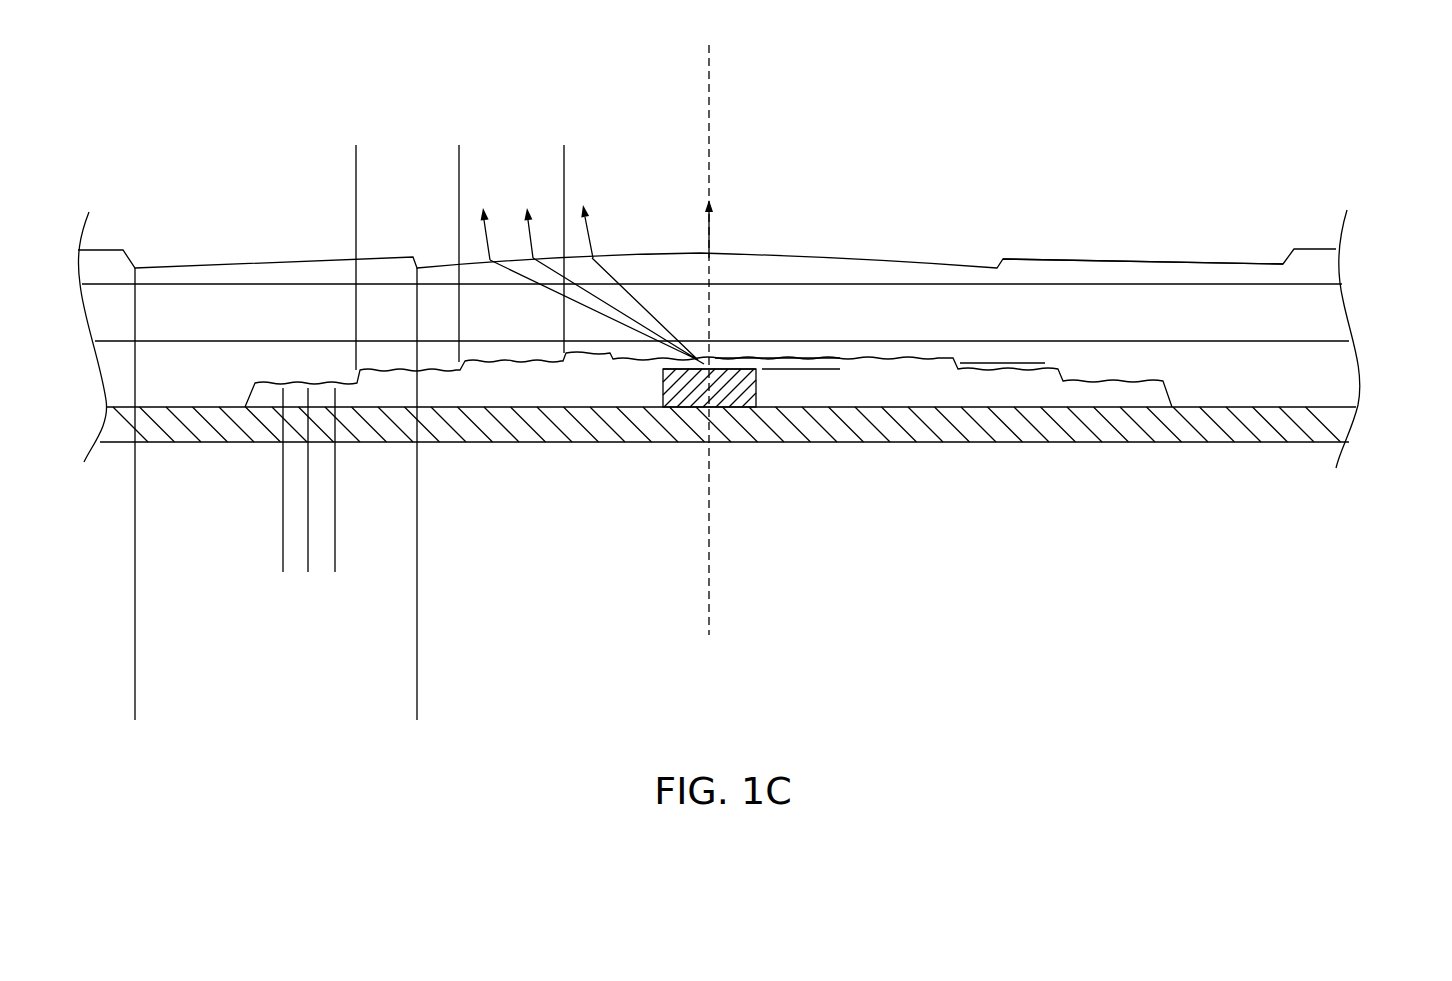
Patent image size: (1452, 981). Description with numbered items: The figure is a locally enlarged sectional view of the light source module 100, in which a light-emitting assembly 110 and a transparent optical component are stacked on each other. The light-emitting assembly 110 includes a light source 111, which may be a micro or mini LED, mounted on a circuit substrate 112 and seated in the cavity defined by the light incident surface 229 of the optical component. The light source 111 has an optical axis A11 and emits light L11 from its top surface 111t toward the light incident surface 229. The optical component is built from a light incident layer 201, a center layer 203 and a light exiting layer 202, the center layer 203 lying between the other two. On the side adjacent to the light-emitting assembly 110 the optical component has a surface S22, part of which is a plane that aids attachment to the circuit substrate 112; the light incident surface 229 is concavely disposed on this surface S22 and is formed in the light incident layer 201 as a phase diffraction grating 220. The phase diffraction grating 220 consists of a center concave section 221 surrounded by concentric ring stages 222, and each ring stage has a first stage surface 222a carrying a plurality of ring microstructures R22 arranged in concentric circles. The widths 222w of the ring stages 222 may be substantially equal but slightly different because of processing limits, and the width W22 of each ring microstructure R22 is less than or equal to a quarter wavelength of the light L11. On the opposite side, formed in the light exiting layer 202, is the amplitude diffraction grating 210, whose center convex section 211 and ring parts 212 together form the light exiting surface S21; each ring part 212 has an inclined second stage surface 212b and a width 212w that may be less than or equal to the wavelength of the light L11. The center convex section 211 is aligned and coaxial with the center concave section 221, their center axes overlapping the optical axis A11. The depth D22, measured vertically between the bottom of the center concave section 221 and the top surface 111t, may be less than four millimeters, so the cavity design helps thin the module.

The light source module 100 is at (74, 77).
The light-emitting assembly 110 is at (715, 519).
The light source 111 is at (733, 397).
The top surface 111t is at (733, 350).
The circuit substrate 112 is at (807, 435).
The light incident layer 201 is at (1340, 376).
The light exiting layer 202 is at (1324, 265).
The center layer 203 is at (1331, 315).
The amplitude diffraction grating 210 is at (1092, 140).
The center convex section 211 is at (855, 273).
The ring parts 212 is at (1022, 262).
The second stage surface 212b is at (1090, 245).
The width 212w is at (135, 712).
The phase diffraction grating 220 is at (438, 519).
The center concave section 221 is at (697, 350).
The ring stages 222 is at (492, 350).
The first stage surface 222a is at (531, 380).
The widths 222w is at (564, 155).
The light incident surface 229 is at (1124, 400).
The optical axis A11 is at (710, 87).
The light L11 is at (709, 239).
The depth D22 is at (833, 382).
The width W22 is at (335, 567).
The ring microstructures R22 is at (963, 363).
The light exiting surface S21 is at (1308, 230).
The surface S22 is at (1277, 422).